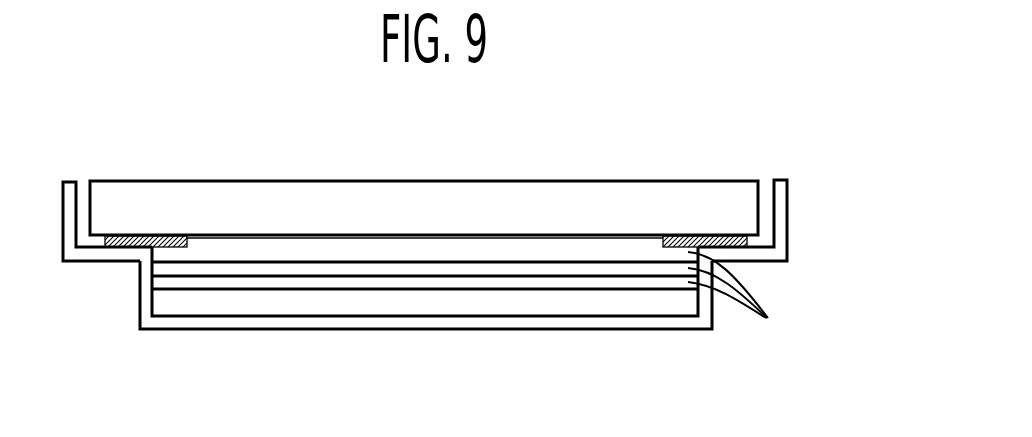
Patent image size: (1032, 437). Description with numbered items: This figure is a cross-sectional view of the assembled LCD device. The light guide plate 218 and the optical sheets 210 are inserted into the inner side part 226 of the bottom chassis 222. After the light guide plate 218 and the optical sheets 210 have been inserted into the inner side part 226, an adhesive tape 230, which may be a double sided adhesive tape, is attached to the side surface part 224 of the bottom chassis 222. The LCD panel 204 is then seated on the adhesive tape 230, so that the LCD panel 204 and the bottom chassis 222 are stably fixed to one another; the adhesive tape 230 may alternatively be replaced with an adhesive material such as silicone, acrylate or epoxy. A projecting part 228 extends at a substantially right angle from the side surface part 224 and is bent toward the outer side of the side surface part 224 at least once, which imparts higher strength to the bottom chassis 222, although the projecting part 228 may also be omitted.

The LCD panel 204 is at (670, 187).
The optical sheets 210 is at (768, 318).
The light guide plate 218 is at (447, 303).
The bottom chassis 222 is at (712, 345).
The side surface part 224 is at (102, 264).
The inner side part 226 is at (360, 322).
The projecting part 228 is at (783, 201).
The adhesive tape 230 is at (748, 240).